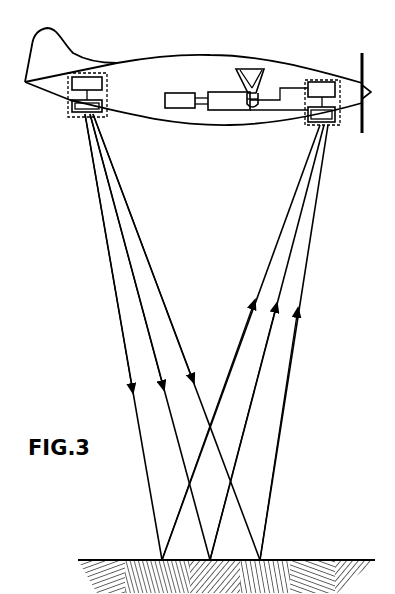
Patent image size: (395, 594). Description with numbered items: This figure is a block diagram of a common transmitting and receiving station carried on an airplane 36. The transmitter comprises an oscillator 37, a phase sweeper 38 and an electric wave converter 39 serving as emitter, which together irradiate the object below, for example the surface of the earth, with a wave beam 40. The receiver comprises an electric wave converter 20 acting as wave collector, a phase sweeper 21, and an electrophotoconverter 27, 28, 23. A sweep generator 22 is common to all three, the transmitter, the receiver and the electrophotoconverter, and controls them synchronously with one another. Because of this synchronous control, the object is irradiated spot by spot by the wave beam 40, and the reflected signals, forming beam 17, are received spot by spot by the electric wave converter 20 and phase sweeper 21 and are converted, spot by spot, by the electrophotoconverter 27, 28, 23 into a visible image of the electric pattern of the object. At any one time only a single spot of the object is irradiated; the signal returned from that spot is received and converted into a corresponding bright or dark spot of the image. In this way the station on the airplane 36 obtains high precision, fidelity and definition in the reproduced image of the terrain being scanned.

The reflected signal beam 17 is at (287, 387).
The electric wave converter 20 is at (331, 118).
The phase sweeper 21 is at (305, 120).
The sweep generator 22 is at (182, 100).
The electrophotoconverter 23 is at (257, 68).
The electrophotoconverter 27 is at (312, 82).
The electrophotoconverter 28 is at (333, 72).
The airplane 36 is at (213, 60).
The oscillator 37 is at (85, 82).
The phase sweeper 38 is at (72, 110).
The electric wave converter 39 is at (78, 112).
The wave beam 40 is at (176, 335).